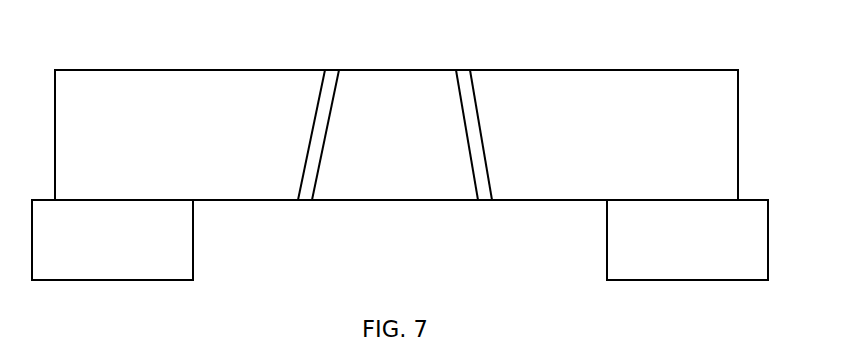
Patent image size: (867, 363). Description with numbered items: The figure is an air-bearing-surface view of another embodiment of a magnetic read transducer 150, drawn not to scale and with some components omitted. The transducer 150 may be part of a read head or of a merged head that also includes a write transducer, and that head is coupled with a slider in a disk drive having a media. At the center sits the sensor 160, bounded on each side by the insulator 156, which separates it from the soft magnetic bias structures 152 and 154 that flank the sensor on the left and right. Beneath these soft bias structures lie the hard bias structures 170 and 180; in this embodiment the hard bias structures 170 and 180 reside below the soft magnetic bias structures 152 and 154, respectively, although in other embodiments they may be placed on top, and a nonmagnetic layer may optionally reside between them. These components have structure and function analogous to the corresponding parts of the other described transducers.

The magnetic read transducer 150 is at (420, 34).
The soft magnetic bias structure 152 is at (525, 70).
The soft magnetic bias structure 154 is at (267, 70).
The insulator 156 is at (311, 200).
The sensor 160 is at (362, 200).
The hard bias structure 170 is at (687, 280).
The hard bias structure 180 is at (115, 280).